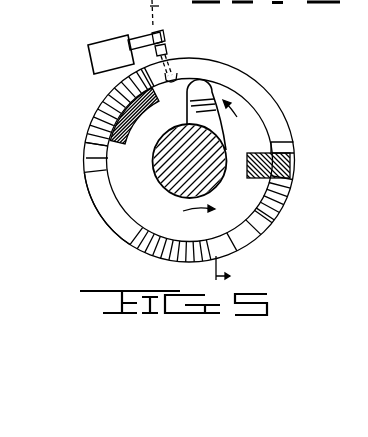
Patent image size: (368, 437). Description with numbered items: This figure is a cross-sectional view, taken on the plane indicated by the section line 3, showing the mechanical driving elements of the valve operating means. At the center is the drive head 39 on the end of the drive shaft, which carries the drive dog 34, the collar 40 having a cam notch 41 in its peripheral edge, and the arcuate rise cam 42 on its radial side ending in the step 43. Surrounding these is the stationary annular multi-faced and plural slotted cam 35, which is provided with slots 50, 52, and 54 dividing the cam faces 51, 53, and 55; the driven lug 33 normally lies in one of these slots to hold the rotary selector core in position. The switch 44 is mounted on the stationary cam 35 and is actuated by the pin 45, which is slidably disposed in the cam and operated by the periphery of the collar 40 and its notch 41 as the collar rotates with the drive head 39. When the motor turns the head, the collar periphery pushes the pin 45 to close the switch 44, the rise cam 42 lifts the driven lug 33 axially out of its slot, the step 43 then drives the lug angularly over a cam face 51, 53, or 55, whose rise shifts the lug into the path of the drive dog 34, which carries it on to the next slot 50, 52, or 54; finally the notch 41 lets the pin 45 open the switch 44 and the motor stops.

The section line 3— 3 is at (196, 142).
The driven lug 33 is at (284, 164).
The drive dog 34 is at (208, 82).
The stationary annular multi-faced and plural slotted cam 35 is at (290, 110).
The drive head 39 is at (177, 186).
The collar 40 is at (282, 201).
The cam notch 41 is at (174, 78).
The arcuate rise cam 42 is at (104, 98).
The step 43 is at (134, 104).
The switch 44 is at (110, 47).
The pin 45 is at (171, 61).
The slot 50 is at (293, 147).
The cam face 51 is at (260, 95).
The slot 52 is at (88, 158).
The cam face 53 is at (100, 202).
The slot 54 is at (238, 247).
The cam face 55 is at (262, 224).